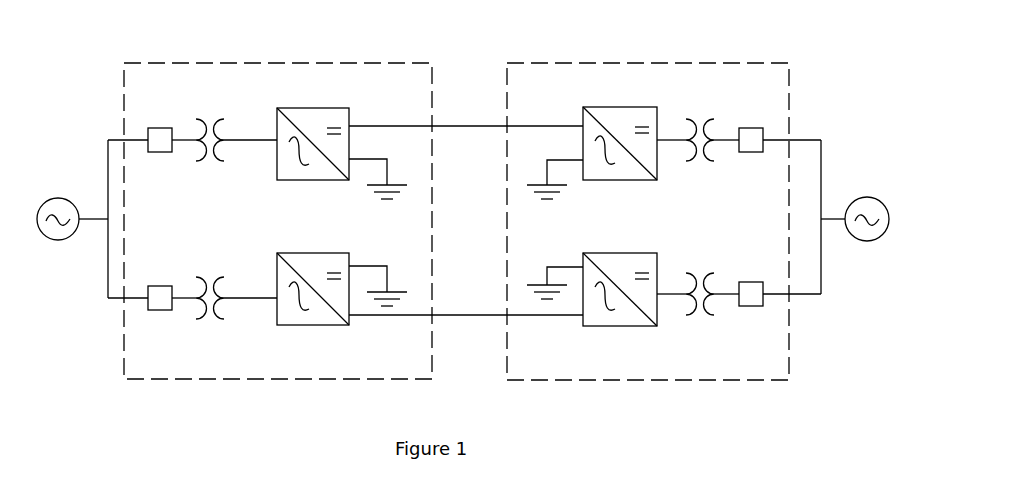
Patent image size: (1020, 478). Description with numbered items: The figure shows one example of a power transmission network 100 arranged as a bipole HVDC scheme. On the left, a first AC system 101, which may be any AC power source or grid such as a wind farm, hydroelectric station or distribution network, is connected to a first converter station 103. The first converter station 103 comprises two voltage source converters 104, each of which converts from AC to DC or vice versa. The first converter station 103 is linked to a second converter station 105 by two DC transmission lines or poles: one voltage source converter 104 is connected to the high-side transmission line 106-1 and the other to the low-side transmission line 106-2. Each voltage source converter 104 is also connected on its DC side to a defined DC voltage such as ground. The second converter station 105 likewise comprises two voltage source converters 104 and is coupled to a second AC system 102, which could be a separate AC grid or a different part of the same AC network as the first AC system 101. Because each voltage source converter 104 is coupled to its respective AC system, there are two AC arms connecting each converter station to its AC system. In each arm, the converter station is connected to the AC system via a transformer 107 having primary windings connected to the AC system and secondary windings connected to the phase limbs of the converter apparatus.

The power network 100 is at (749, 41).
The first AC system 101 is at (53, 197).
The second AC system 102 is at (866, 197).
The first converter station 103 is at (293, 63).
The voltage source converter 104 is at (327, 108).
The second converter station 105 is at (598, 63).
The high-side transmission line 106-1 is at (455, 126).
The low-side transmission line 106-2 is at (453, 315).
The transformer 107 is at (214, 118).